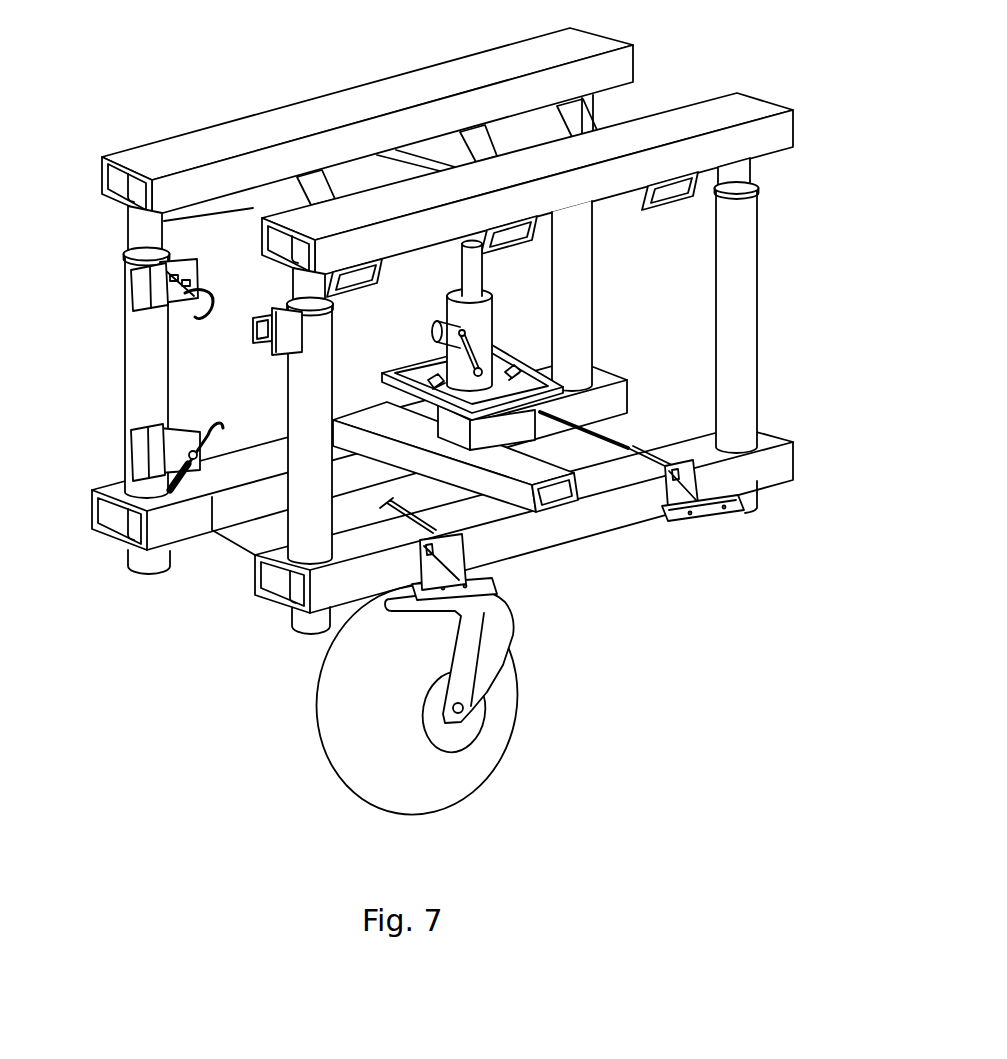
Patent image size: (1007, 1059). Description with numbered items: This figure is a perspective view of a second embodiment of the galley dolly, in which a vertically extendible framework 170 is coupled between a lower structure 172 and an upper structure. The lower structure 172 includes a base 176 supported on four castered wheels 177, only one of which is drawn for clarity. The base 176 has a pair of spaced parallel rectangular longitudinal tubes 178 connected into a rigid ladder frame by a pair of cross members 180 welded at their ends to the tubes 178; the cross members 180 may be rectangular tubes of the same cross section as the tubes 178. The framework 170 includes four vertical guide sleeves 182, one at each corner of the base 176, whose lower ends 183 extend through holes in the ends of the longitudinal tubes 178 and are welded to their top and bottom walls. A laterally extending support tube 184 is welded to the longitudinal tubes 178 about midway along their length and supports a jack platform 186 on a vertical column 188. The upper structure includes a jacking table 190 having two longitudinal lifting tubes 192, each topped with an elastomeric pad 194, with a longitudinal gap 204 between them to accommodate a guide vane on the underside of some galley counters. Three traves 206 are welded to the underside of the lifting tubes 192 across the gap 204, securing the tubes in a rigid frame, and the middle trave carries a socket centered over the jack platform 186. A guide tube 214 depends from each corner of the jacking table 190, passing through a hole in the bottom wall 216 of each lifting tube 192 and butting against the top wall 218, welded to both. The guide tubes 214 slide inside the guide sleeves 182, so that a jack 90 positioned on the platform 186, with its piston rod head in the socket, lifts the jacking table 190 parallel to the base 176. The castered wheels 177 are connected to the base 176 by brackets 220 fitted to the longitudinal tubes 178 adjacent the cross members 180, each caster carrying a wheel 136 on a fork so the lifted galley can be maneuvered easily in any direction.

The jack 90 is at (450, 331).
The wheel 136 is at (337, 731).
The vertically extendible framework 170 is at (438, 364).
The lower structure 172 is at (429, 587).
The base 176 is at (442, 484).
The castered wheels 177 is at (430, 682).
The longitudinal tubes 178 is at (551, 572).
The cross members 180 is at (243, 532).
The guide sleeves 182 is at (139, 404).
The lower ends of the guide sleeves 183 is at (130, 558).
The support tube 184 is at (390, 402).
The jack platform 186 is at (515, 376).
The vertical column 188 is at (490, 437).
The jacking table 190 is at (411, 153).
The longitudinal lifting tubes 192 is at (331, 130).
The elastomeric pad 194 is at (723, 92).
The longitudinal gap 204 is at (478, 110).
The traves 206 is at (462, 243).
The guide tubes 214 is at (128, 231).
The bottom wall 216 is at (106, 205).
The top wall 218 is at (104, 172).
The brackets 220 is at (720, 532).